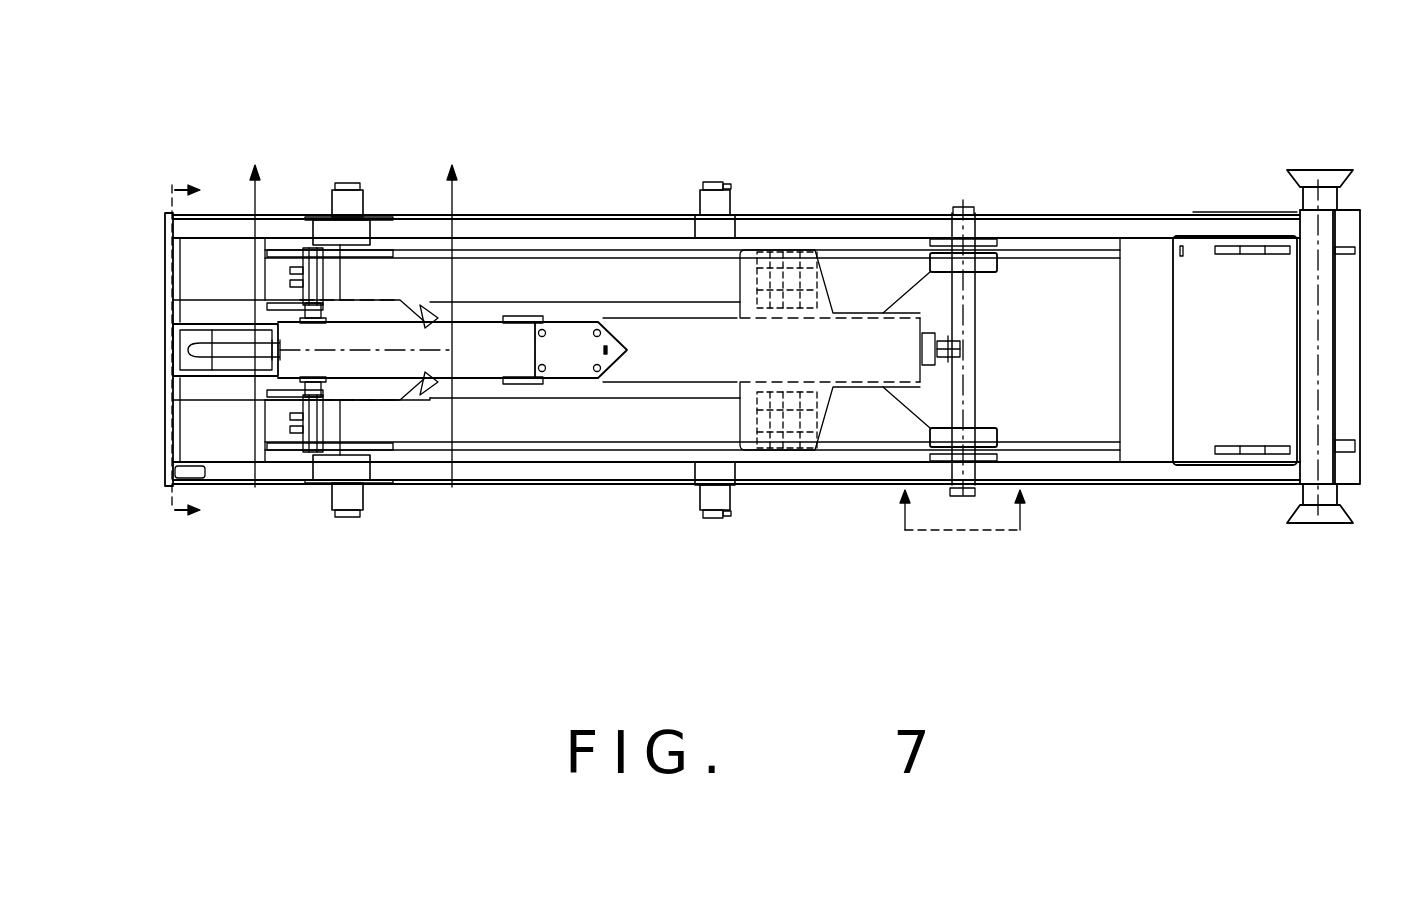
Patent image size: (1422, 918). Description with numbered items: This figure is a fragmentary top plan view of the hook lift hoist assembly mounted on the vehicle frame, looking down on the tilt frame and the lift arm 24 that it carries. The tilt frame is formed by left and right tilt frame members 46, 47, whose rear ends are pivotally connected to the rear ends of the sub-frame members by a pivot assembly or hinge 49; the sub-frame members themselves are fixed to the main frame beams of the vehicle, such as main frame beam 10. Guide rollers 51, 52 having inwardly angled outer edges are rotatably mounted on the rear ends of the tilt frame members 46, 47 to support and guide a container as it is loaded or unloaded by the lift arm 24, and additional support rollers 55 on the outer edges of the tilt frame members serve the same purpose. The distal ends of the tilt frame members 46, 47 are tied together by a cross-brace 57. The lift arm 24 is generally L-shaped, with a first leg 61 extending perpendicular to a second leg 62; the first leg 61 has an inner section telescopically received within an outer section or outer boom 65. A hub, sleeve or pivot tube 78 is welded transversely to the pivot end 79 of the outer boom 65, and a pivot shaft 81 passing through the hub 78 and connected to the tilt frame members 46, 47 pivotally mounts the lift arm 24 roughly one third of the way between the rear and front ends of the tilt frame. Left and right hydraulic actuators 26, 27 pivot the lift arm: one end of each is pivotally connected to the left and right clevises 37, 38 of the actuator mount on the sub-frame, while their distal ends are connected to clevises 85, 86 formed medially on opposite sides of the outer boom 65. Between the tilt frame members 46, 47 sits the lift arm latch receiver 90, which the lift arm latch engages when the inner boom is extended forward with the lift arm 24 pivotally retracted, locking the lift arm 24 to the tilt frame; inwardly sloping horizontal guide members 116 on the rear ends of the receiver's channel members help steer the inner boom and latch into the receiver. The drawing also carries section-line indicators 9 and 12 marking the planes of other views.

The section line 9- 9 is at (197, 351).
The left main frame beam 10 is at (354, 305).
The section line 12- 12 is at (962, 510).
The lift arm 24 is at (240, 372).
The left hydraulic actuator 26 is at (430, 430).
The right hydraulic actuator 27 is at (612, 270).
The left clevis 37 is at (305, 440).
The right clevis 38 is at (300, 235).
The left tilt frame member 46 is at (652, 485).
The right tilt frame member 47 is at (655, 213).
The pivot assembly or hinge 49 is at (1350, 348).
The guide roller 51 is at (1338, 523).
The guide roller 52 is at (1340, 172).
The support rollers 55 is at (715, 182).
The cross-brace 57 is at (165, 276).
The first leg 61 is at (487, 380).
The second leg 62 is at (200, 340).
The outer section or outer boom 65 is at (622, 380).
The hub, sleeve or pivot tube 78 is at (985, 288).
The pivot end 79 is at (950, 385).
The pivot shaft 81 is at (968, 212).
The clevis 85 is at (800, 430).
The clevis 86 is at (805, 272).
The lift arm latch receiver 90 is at (375, 300).
The horizontal guide members 116 is at (433, 312).